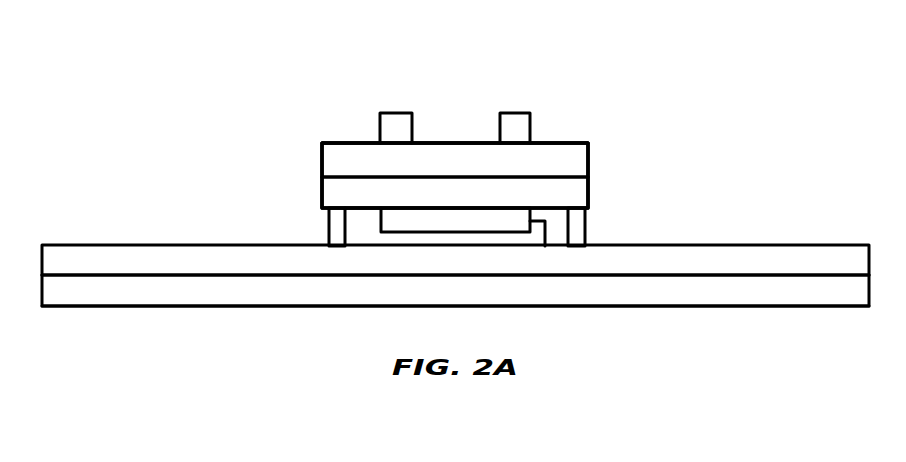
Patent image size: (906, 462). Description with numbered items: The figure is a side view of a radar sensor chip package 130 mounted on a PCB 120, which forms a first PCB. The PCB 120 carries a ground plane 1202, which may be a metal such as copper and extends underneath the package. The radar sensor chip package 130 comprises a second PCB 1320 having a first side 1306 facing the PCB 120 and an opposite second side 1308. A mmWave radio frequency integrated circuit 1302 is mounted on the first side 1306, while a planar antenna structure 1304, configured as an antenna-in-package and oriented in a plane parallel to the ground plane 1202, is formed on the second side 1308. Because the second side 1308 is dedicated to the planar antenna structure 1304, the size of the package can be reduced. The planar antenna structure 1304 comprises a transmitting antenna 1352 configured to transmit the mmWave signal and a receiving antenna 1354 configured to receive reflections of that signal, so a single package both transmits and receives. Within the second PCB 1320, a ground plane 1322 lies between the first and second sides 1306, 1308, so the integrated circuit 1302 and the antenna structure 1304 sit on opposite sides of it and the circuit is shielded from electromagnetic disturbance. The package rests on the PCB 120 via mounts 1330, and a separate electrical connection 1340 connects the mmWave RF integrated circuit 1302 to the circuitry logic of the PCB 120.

The PCB 120 is at (72, 267).
The ground plane 1202 is at (93, 277).
The radar sensor chip package 130 is at (618, 172).
The planar antenna structure 1304 is at (492, 80).
The second side 1308 is at (335, 142).
The second PCB 1320 is at (317, 143).
The ground plane 1322 is at (533, 177).
The receiving antenna 1354 is at (398, 125).
The transmitting antenna 1352 is at (517, 118).
The mounts 1330 is at (325, 218).
The mmWave radio frequency integrated circuit 1302 is at (437, 223).
The electrical connection 1340 is at (560, 248).
The first side 1306 is at (362, 210).